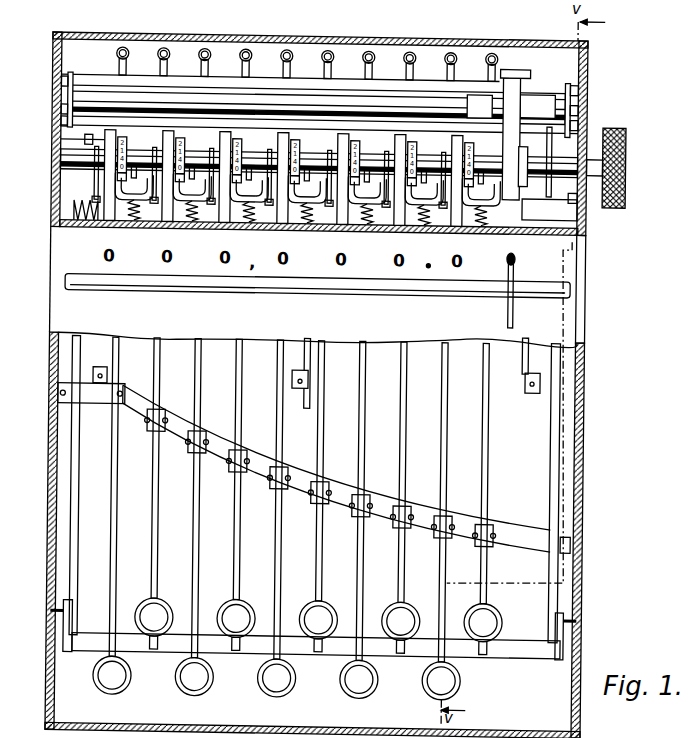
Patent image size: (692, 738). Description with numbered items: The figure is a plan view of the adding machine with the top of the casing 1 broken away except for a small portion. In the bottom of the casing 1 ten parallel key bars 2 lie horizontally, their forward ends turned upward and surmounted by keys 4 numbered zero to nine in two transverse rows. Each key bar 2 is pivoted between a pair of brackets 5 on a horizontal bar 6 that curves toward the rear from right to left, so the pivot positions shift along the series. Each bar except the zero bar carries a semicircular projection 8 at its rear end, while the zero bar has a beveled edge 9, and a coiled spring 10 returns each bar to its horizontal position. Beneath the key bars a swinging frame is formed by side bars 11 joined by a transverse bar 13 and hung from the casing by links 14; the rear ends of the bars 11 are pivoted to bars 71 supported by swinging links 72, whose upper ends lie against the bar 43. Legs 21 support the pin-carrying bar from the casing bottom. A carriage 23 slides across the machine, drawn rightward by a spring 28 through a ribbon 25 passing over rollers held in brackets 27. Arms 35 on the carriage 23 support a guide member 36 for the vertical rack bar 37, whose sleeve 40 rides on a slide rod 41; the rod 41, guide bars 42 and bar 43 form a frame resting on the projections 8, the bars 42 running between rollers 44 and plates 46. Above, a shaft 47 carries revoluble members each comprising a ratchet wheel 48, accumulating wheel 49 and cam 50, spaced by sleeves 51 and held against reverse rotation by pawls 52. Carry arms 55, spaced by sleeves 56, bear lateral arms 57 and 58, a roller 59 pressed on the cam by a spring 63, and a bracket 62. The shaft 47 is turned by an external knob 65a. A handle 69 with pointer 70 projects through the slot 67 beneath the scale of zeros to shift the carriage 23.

The casing 1 is at (585, 400).
The key bars 2 is at (195, 520).
The keys 4 is at (327, 634).
The brackets 5 is at (160, 434).
The horizontal bar 6 is at (302, 502).
The upstanding projection 8 is at (289, 72).
The beveled upper edge 9 is at (118, 68).
The coiled spring 10 is at (373, 62).
The bars 11 is at (74, 470).
The horizontal bar 13 is at (212, 650).
The links 14 is at (65, 618).
The legs 21 is at (107, 366).
The carriage 23 is at (525, 230).
The flexible tape or ribbon 25 is at (495, 228).
The brackets 27 is at (584, 201).
The spring 28 is at (78, 228).
The arms 35 is at (505, 112).
The vertical guide member 36 is at (508, 70).
The rack bar 37 is at (512, 85).
The sleeve 40 is at (478, 100).
The slide rod 41 is at (345, 102).
The vertical guide bars 42 is at (68, 100).
The bar 43 is at (270, 88).
The rollers 44 is at (62, 116).
The plate 46 is at (68, 85).
The horizontal shaft 47 is at (70, 155).
The ratchet wheel 48 is at (172, 150).
The accumulating wheel 49 is at (186, 142).
The cam 50 is at (162, 150).
The sleeves 51 is at (258, 155).
The pawl 52 is at (400, 226).
The upwardly extending arms 55 is at (330, 205).
The sleeves 56 is at (270, 220).
The arm 57 is at (368, 228).
The arm 58 is at (305, 228).
The roller 59 is at (210, 227).
The bracket 62 is at (132, 224).
The coiled spring 63 is at (248, 228).
The knob 65a is at (627, 181).
The transverse slot 67 is at (392, 290).
The handle 69 is at (514, 308).
The pointer 70 is at (506, 275).
The bars 71 is at (92, 192).
The swinging links 72 is at (96, 150).